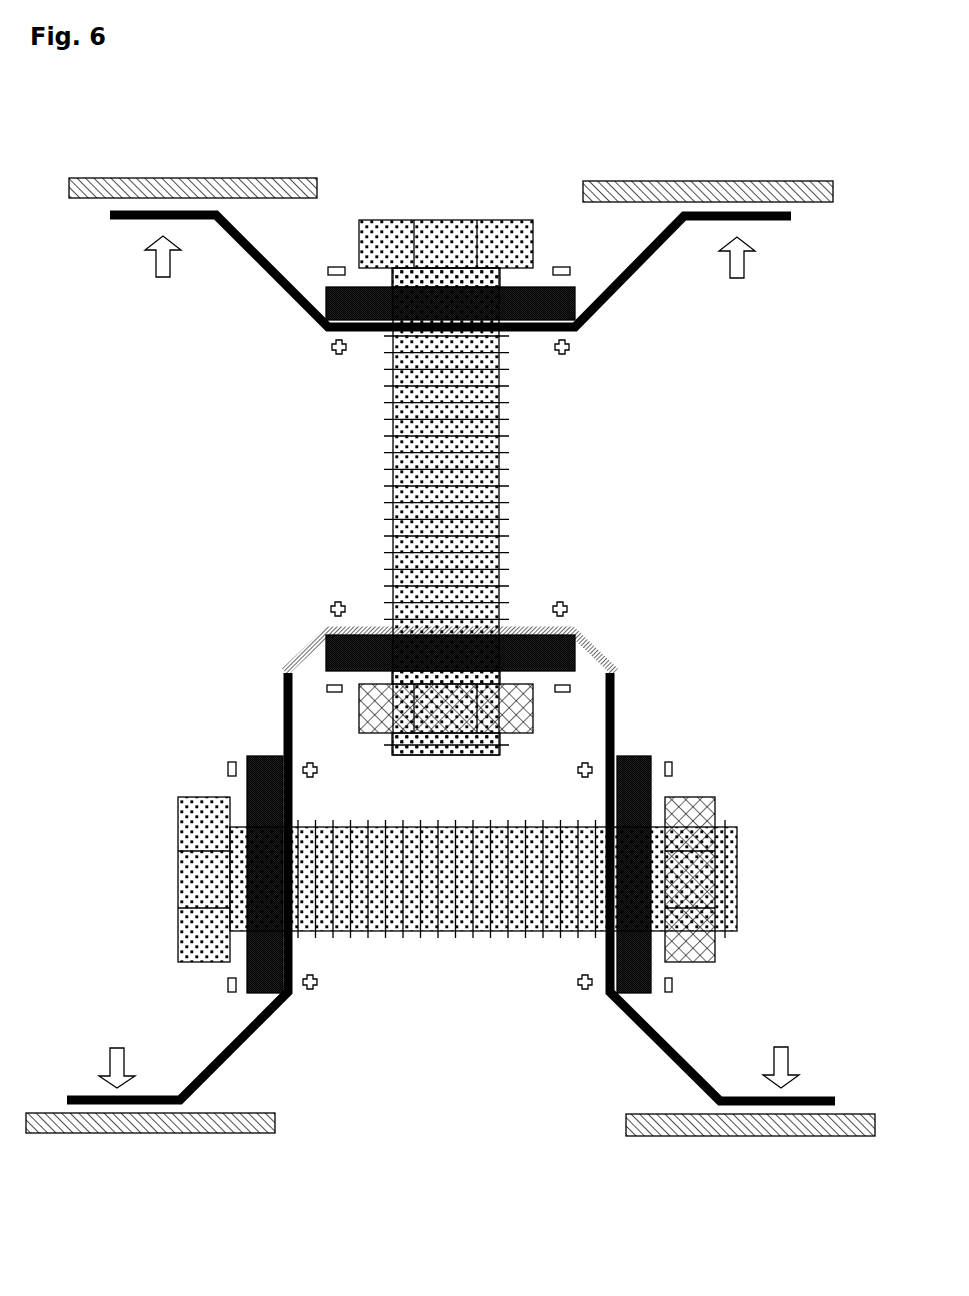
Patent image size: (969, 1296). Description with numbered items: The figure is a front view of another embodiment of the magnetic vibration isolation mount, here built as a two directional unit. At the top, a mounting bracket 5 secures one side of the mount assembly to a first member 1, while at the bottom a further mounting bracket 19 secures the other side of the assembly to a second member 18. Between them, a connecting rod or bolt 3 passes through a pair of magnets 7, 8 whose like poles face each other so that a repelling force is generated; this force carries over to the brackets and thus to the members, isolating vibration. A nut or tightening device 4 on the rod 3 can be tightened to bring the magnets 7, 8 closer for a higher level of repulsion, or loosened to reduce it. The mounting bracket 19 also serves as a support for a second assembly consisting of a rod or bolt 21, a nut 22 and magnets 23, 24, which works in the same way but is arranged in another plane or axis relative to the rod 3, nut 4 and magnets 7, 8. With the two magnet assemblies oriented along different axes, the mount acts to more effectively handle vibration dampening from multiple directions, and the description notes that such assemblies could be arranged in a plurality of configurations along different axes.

The first member 1 is at (193, 178).
The connecting rod or bolt 3 is at (445, 220).
The nut or tightening device 4 is at (357, 708).
The mounting bracket 5 is at (633, 273).
The magnet 7 is at (326, 302).
The magnet 8 is at (325, 653).
The second member 18 is at (150, 1133).
The mounting bracket 19 is at (598, 648).
The rod or bolt 21 is at (178, 877).
The nut 22 is at (688, 797).
The magnet 23 is at (265, 757).
The magnet 24 is at (632, 757).